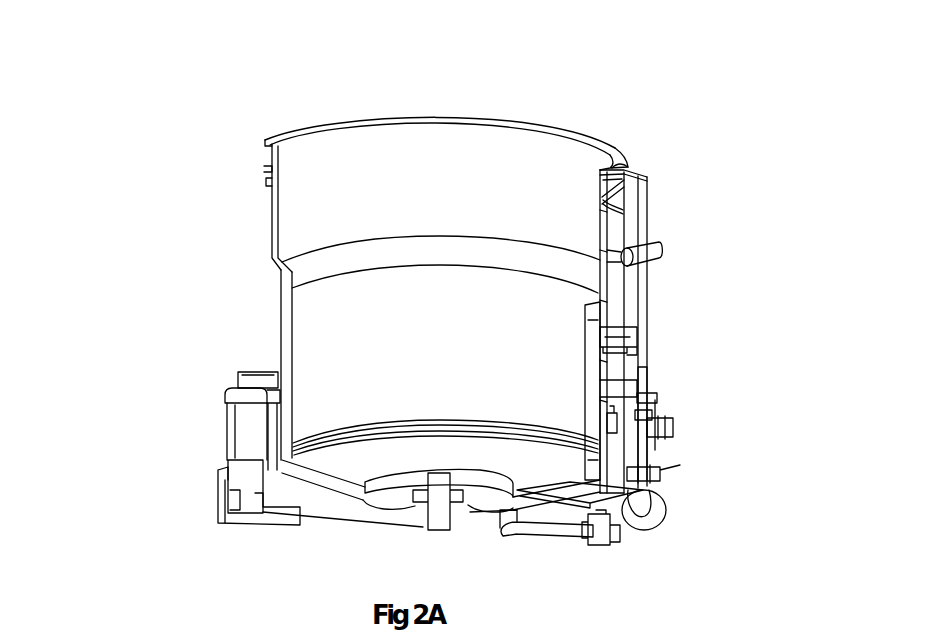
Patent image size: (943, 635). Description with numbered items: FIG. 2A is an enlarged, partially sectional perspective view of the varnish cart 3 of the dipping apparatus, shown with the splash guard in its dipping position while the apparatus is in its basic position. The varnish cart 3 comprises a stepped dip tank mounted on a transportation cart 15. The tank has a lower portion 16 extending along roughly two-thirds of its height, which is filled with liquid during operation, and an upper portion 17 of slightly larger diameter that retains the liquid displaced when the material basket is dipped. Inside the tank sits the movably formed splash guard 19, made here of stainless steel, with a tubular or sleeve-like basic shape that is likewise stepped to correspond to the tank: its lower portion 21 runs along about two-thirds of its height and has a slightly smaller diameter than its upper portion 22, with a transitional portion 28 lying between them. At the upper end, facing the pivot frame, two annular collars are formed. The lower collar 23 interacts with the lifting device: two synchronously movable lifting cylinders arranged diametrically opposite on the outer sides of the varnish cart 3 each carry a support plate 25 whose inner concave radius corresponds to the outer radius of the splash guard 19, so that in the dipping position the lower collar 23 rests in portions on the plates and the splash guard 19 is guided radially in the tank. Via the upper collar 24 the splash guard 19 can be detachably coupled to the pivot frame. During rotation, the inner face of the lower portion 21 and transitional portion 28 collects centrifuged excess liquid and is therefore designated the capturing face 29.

The varnish cart 3 is at (203, 186).
The transportation cart 15 is at (663, 470).
The lower portion 16 is at (277, 336).
The upper portion 17 is at (268, 213).
The splash guard 19 is at (497, 158).
The lower portion 21 is at (588, 400).
The upper portion 22 is at (600, 253).
The lower collar 23 is at (637, 177).
The upper collar 24 is at (622, 166).
The support plate 25 is at (630, 163).
The transitional portion 28 is at (600, 302).
The capturing face 29 is at (580, 362).